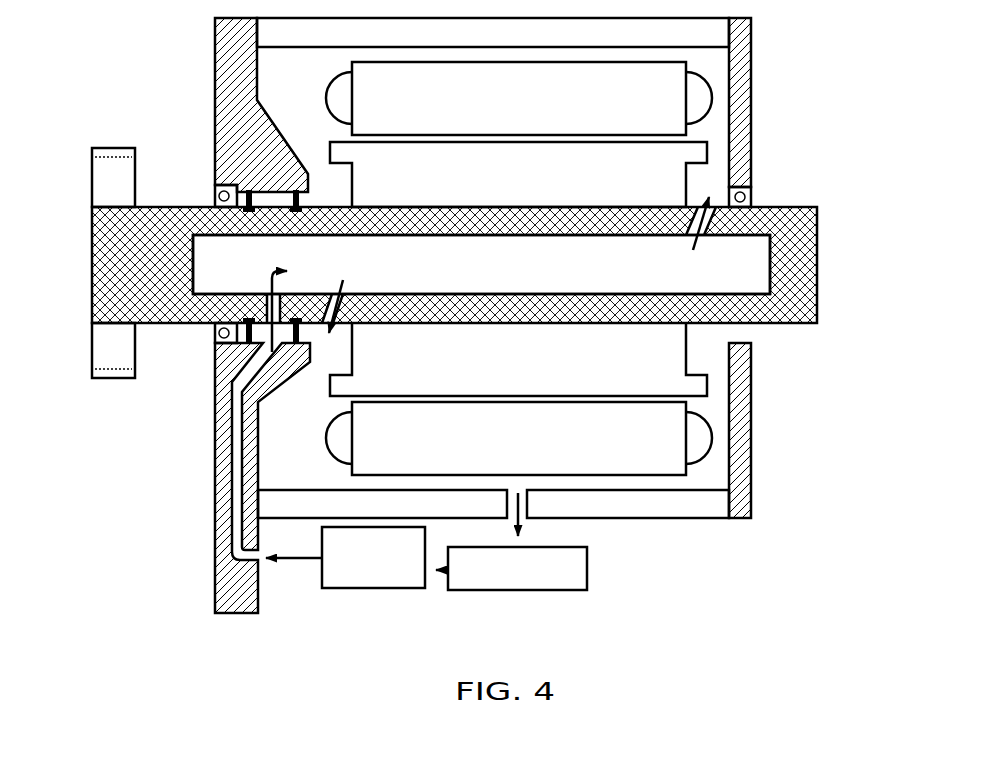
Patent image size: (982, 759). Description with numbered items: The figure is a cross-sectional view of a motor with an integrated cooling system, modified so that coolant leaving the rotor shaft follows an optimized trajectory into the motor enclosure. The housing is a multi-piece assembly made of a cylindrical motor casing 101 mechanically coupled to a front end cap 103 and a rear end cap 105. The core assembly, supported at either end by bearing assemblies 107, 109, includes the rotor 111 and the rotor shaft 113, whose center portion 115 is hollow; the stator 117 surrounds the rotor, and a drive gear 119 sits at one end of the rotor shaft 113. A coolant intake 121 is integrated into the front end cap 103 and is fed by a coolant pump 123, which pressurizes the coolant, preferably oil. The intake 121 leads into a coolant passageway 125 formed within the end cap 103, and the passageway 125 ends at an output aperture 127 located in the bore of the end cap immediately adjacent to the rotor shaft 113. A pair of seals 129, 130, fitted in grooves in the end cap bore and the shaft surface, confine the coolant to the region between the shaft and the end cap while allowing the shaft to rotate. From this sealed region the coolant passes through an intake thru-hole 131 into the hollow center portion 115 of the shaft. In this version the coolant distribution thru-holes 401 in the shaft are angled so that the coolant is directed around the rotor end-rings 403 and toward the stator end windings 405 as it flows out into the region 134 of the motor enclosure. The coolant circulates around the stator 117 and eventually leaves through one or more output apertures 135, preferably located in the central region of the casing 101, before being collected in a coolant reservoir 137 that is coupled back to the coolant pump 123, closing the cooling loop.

The cylindrical motor casing 101 is at (515, 45).
The front end cap 103 is at (228, 75).
The rear end cap 105 is at (748, 60).
The bearing assembly 107 is at (213, 196).
The bearing assembly 109 is at (750, 193).
The rotor 111 is at (515, 186).
The rotor shaft 113 is at (787, 308).
The center portion of rotor shaft 115 is at (515, 277).
The stator 117 is at (515, 106).
The drive gear 119 is at (102, 178).
The coolant intake 121 is at (256, 568).
The coolant pump 123 is at (352, 590).
The coolant passageway 125 is at (235, 497).
The output aperture 127 is at (258, 343).
The seal 129 is at (250, 192).
The seal 130 is at (297, 192).
The intake thru-hole 131 is at (213, 325).
The region of the motor enclosure 134 is at (319, 127).
The output aperture 135 is at (537, 506).
The coolant reservoir 137 is at (500, 592).
The coolant distribution thru-holes 401 is at (354, 310).
The rotor end-rings 403 is at (720, 152).
The stator end windings 405 is at (720, 96).